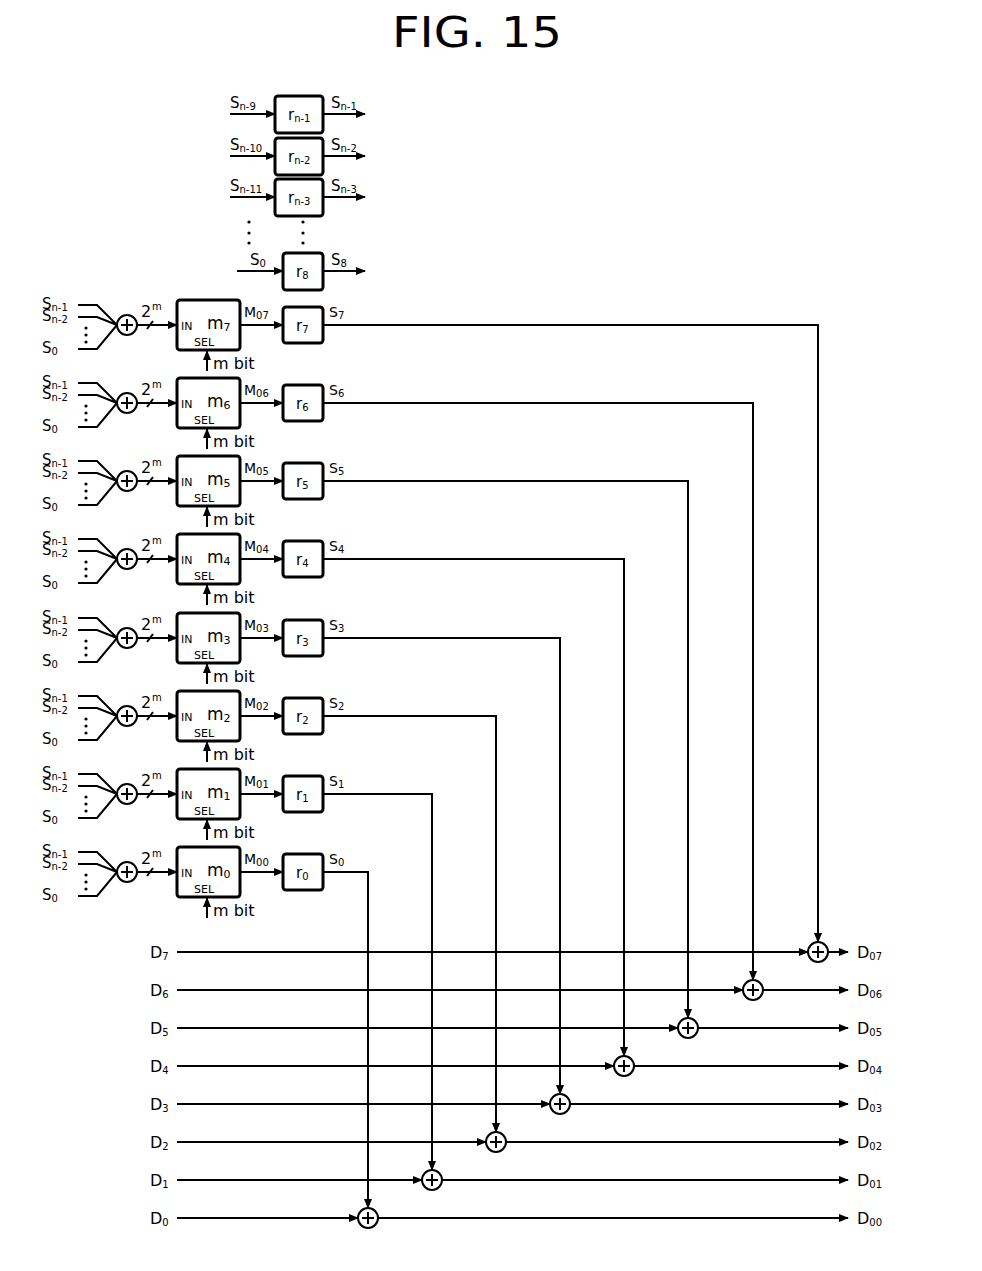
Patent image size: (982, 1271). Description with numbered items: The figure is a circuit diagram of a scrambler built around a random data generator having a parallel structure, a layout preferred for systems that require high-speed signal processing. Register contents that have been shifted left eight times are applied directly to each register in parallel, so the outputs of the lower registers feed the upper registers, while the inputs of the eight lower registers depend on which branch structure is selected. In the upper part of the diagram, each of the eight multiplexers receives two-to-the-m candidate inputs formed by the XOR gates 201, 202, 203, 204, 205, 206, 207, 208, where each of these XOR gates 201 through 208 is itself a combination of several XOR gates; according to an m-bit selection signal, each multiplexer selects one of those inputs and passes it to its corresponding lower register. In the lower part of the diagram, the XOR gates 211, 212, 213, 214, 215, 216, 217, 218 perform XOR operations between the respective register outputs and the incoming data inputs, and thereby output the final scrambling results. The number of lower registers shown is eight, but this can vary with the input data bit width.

The XOR gate 201 is at (107, 861).
The XOR gate 202 is at (107, 783).
The XOR gate 203 is at (107, 705).
The XOR gate 204 is at (107, 627).
The XOR gate 205 is at (107, 548).
The XOR gate 206 is at (107, 470).
The XOR gate 207 is at (107, 392).
The XOR gate 208 is at (107, 314).
The XOR gate 211 is at (391, 1206).
The XOR gate 212 is at (455, 1168).
The XOR gate 213 is at (519, 1130).
The XOR gate 214 is at (583, 1092).
The XOR gate 215 is at (647, 1054).
The XOR gate 216 is at (711, 1016).
The XOR gate 217 is at (776, 978).
The XOR gate 218 is at (841, 940).